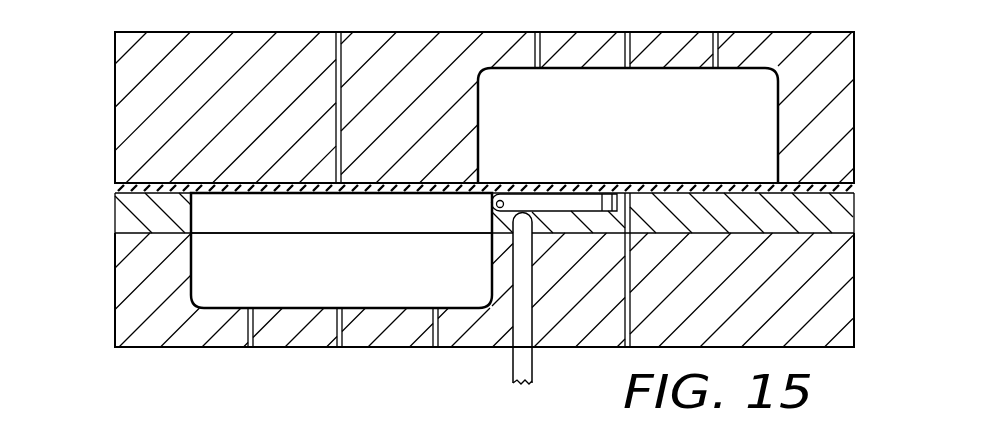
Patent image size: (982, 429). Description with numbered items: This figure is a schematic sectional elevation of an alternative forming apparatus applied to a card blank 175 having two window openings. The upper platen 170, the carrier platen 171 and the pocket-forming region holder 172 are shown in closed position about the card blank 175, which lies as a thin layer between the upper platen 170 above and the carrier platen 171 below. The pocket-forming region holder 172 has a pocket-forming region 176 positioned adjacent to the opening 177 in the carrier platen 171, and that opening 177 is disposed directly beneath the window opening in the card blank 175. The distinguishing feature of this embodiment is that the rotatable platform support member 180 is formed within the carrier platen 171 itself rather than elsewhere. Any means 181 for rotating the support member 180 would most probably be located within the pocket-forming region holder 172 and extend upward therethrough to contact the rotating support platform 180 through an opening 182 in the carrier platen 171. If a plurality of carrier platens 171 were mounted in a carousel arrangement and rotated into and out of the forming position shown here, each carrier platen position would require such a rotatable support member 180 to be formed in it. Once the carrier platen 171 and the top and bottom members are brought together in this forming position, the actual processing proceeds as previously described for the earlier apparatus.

The upper platen 170 is at (838, 106).
The carrier platen 171 is at (838, 213).
The pocket-forming region holder 172 is at (843, 293).
The card blank 175 is at (117, 187).
The pocket-forming region 176 is at (400, 272).
The opening in the carrier platen 177 is at (298, 217).
The rotatable platform support member 180 is at (557, 205).
The means for rotating the support member 181 is at (515, 368).
The opening in the carrier platen 182 is at (507, 224).